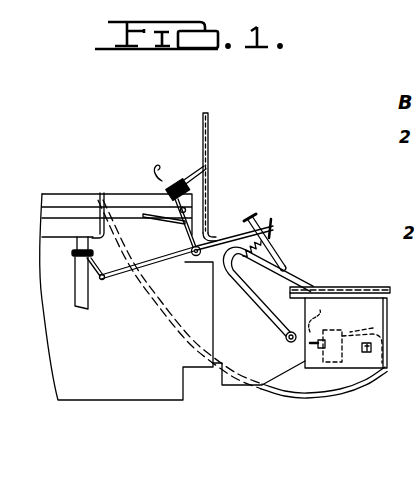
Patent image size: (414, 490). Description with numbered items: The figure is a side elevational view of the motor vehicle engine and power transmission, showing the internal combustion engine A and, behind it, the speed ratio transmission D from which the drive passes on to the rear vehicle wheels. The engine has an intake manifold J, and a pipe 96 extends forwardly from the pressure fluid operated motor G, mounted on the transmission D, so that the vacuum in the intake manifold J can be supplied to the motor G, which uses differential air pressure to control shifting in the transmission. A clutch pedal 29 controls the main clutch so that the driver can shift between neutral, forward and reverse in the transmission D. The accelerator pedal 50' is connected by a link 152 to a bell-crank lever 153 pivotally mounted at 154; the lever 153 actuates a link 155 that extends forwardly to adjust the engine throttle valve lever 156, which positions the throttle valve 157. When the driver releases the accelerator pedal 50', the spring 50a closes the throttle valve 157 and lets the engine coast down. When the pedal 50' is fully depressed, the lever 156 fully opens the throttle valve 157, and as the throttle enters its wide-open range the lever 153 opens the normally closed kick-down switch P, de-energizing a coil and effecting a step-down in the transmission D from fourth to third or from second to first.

The internal combustion engine A is at (93, 392).
The engine intake manifold J is at (68, 225).
The kick-down switch P is at (178, 182).
The speed ratio transmission D is at (372, 270).
The pressure fluid operated motor G is at (379, 327).
The clutch pedal 29 is at (276, 229).
The spring 50a is at (265, 235).
The accelerator pedal 50' is at (278, 293).
The pipe 96 is at (305, 393).
The link 152 is at (227, 236).
The bell-crank lever 153 is at (172, 239).
The pivot 154 is at (210, 196).
The link 155 is at (108, 274).
The engine throttle valve lever 156 is at (90, 273).
The throttle valve 157 is at (77, 265).